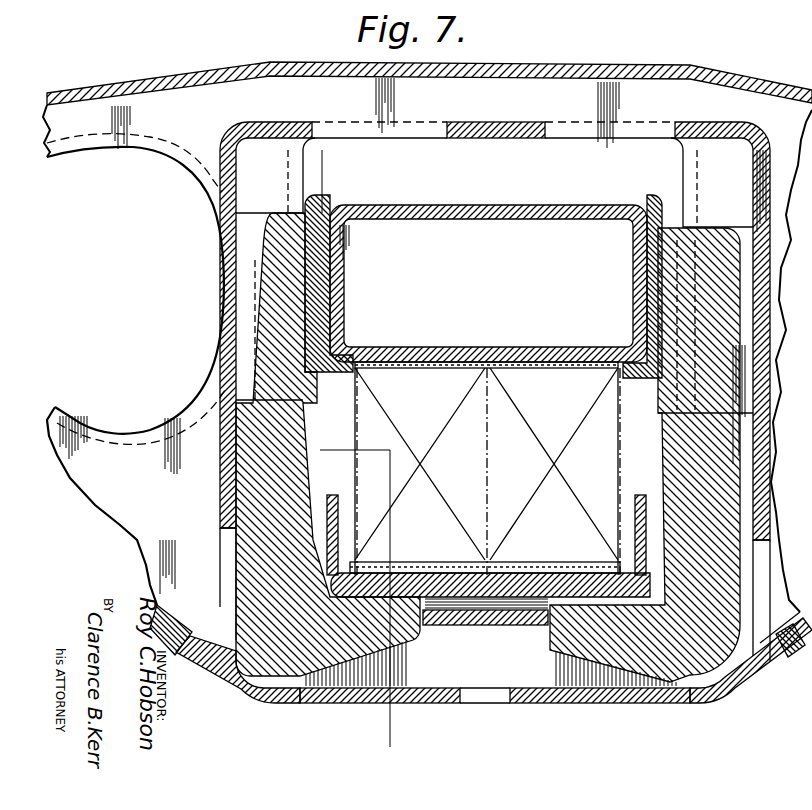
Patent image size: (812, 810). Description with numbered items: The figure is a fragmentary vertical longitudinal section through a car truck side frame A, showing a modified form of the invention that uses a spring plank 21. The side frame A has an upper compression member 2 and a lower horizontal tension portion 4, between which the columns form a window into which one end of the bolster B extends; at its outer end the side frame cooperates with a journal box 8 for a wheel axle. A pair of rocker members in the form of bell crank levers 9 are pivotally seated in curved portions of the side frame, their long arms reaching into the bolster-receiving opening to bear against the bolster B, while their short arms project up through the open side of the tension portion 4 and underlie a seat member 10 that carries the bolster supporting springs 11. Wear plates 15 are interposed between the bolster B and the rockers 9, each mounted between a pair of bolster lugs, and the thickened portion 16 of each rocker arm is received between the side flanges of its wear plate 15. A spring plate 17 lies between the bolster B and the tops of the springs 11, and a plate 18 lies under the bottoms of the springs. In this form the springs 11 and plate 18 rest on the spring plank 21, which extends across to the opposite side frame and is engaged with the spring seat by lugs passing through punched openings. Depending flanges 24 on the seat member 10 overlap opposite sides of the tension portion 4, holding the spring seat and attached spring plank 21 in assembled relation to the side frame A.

The car truck side frame A is at (427, 358).
The bolster B is at (525, 214).
The compression member 2 is at (772, 376).
The lower horizontal tension portion 4 is at (553, 703).
The journal box 8 is at (392, 741).
The rocker member (bell crank lever) 9 is at (697, 472).
The seat member 10 is at (487, 603).
The bolster supporting springs 11 is at (623, 433).
The wear plate 15 is at (653, 282).
The thickened portion of rocker arm 16 is at (794, 677).
The spring plate 17 is at (434, 369).
The plate 18 is at (455, 563).
The spring plank 21 is at (565, 566).
The depending flanges 24 is at (528, 614).